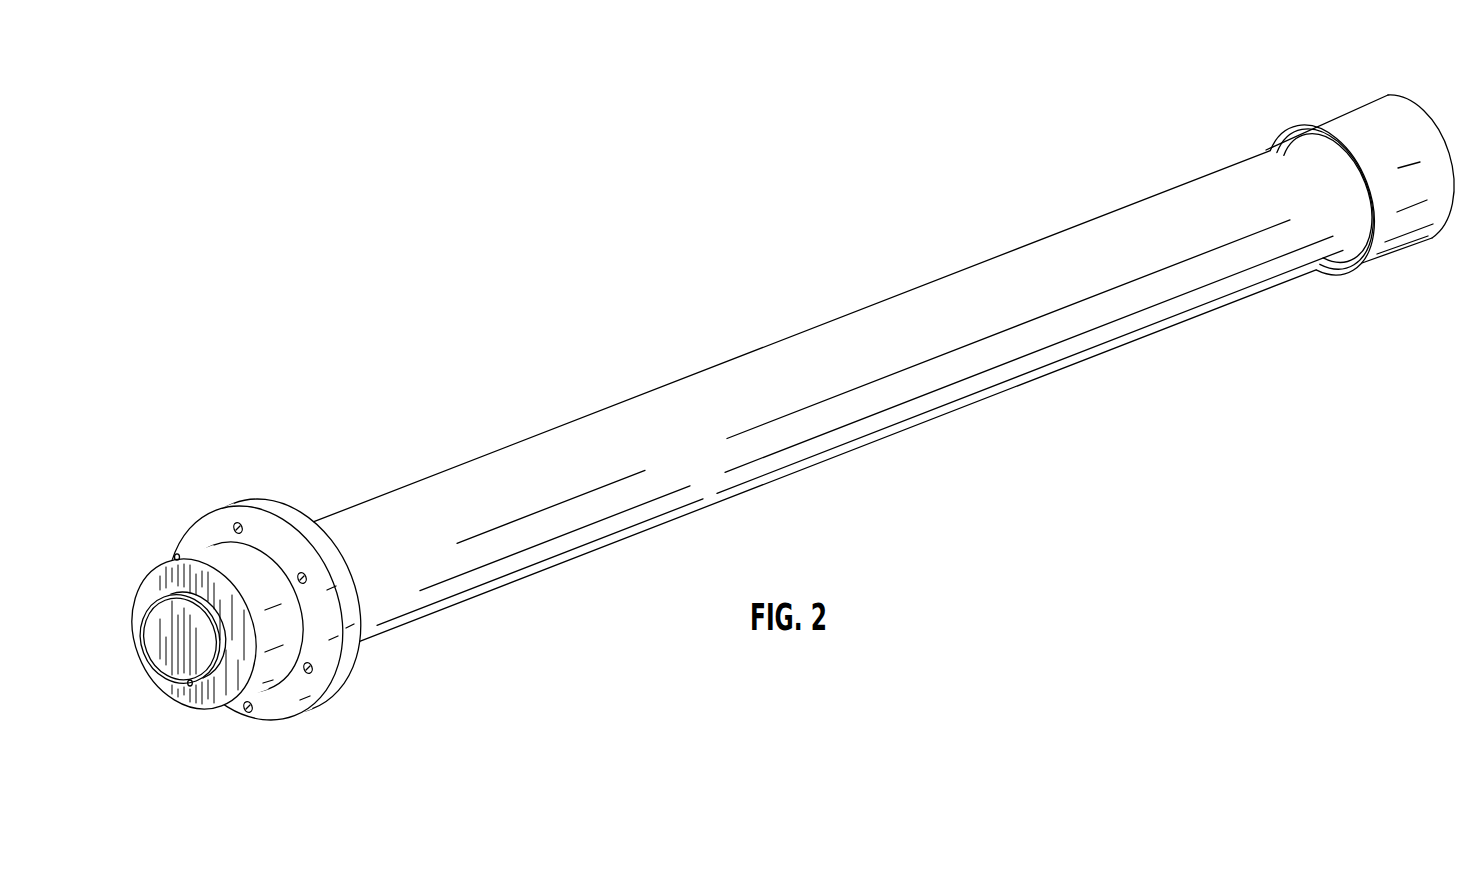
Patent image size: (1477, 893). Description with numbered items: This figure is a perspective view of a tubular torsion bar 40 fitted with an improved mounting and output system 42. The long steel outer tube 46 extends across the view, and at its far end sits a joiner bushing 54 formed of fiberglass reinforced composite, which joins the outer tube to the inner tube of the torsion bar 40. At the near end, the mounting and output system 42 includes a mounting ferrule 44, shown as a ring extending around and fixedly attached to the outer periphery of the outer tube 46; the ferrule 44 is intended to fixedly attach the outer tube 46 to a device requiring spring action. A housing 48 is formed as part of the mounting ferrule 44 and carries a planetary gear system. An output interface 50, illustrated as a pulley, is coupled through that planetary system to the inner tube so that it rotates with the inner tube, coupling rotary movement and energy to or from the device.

The tubular torsion bar 40 is at (727, 224).
The mounting and output system 42 is at (281, 470).
The mounting ferrule 44 is at (278, 710).
The outer tube 46 is at (852, 310).
The housing 48 is at (160, 578).
The output interface 50 is at (172, 672).
The joiner bushing 54 is at (1348, 113).